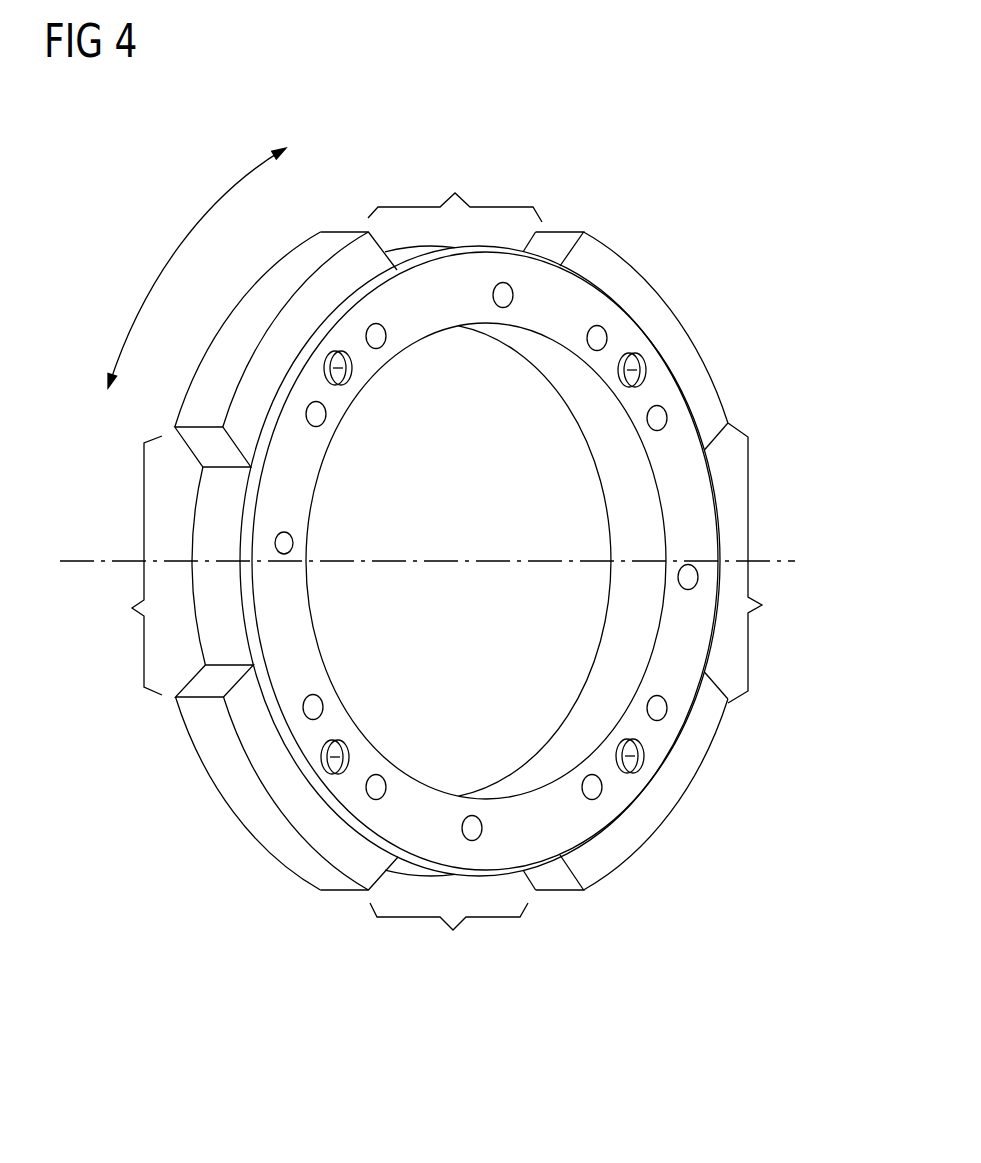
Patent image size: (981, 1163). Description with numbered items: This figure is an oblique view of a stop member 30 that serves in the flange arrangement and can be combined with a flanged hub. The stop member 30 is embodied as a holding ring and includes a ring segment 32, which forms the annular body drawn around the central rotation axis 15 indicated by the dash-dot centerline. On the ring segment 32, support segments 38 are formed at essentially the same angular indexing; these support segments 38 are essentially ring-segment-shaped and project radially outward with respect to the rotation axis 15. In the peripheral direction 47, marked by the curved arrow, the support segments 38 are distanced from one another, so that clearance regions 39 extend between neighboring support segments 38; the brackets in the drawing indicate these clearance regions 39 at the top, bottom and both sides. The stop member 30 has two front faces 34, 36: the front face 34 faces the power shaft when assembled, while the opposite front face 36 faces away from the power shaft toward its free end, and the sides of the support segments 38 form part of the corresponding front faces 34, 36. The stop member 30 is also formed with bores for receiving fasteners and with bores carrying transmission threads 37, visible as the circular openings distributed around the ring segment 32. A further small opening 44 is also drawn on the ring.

The rotation axis 15 is at (61, 562).
The stop member 30 is at (711, 175).
The ring segment 32 is at (253, 596).
The front face 34 is at (213, 778).
The front face 36 is at (308, 473).
The bores with transmission threads 37 is at (633, 368).
The support segments 38 is at (318, 252).
The clearance regions 39 is at (444, 565).
The small hole 44 is at (282, 545).
The peripheral direction 47 is at (177, 252).